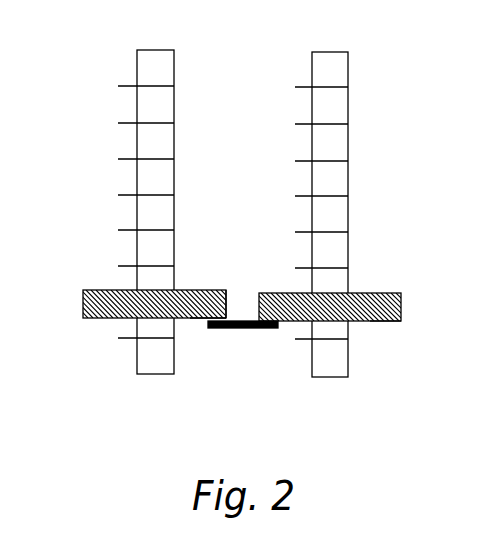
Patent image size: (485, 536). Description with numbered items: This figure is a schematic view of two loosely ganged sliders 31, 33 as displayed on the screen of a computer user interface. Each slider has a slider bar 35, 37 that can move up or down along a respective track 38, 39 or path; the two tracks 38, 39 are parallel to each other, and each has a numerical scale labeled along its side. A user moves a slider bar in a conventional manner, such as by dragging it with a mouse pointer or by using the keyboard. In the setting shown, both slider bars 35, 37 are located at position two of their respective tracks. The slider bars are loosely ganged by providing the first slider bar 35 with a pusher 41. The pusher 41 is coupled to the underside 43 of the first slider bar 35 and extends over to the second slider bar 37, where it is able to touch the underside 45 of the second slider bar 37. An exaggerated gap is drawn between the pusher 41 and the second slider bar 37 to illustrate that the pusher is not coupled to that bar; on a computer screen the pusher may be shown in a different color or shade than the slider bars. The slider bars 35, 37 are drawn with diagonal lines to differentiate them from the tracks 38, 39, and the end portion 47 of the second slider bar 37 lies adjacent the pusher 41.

The slider 33 is at (101, 195).
The slider 31 is at (358, 198).
The track 39 is at (137, 211).
The track 38 is at (348, 212).
The second slider bar 37 is at (83, 303).
The first slider bar 35 is at (380, 293).
The end of first bar 47 is at (200, 290).
The underside of second slider bar 45 is at (197, 319).
The underside of first slider bar 43 is at (388, 322).
The pusher 41 is at (226, 329).